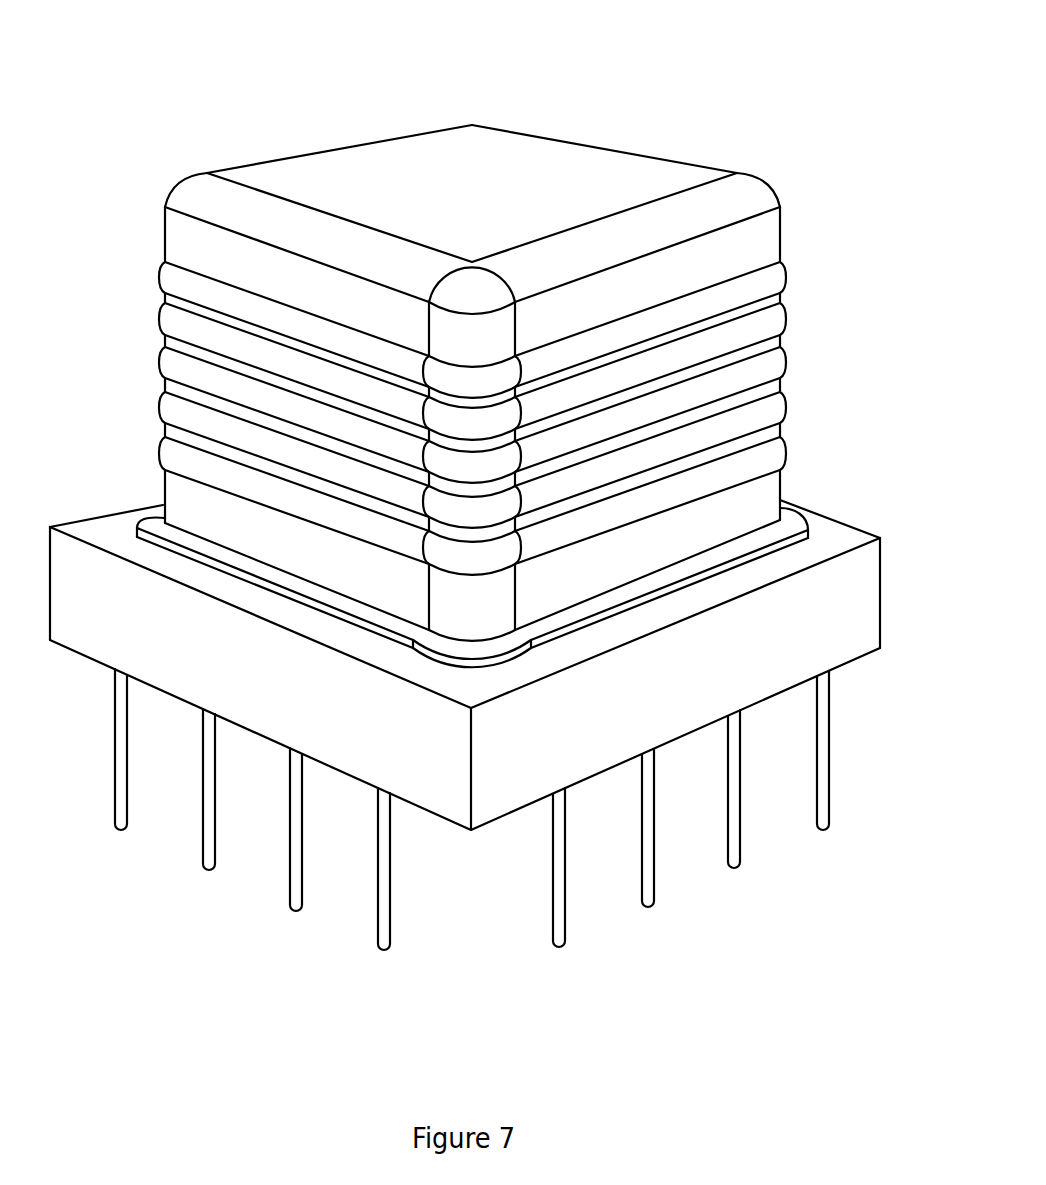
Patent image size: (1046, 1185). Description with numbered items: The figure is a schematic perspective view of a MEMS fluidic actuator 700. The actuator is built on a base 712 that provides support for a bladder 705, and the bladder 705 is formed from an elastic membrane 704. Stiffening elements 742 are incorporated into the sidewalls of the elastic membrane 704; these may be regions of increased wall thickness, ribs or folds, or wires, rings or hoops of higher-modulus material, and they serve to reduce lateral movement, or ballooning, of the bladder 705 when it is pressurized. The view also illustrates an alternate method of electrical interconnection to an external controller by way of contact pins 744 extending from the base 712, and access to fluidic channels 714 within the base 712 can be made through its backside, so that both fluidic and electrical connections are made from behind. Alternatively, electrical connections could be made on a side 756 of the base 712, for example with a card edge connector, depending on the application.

The MEMS fluidic actuator 700 is at (617, 117).
The elastic membrane 704 is at (740, 257).
The bladder 705 is at (516, 210).
The stiffening elements 742 is at (152, 259).
The base 712 is at (130, 626).
The side of base 756 is at (215, 662).
The fluidic channels 714 is at (503, 848).
The contact pins 744 is at (202, 842).